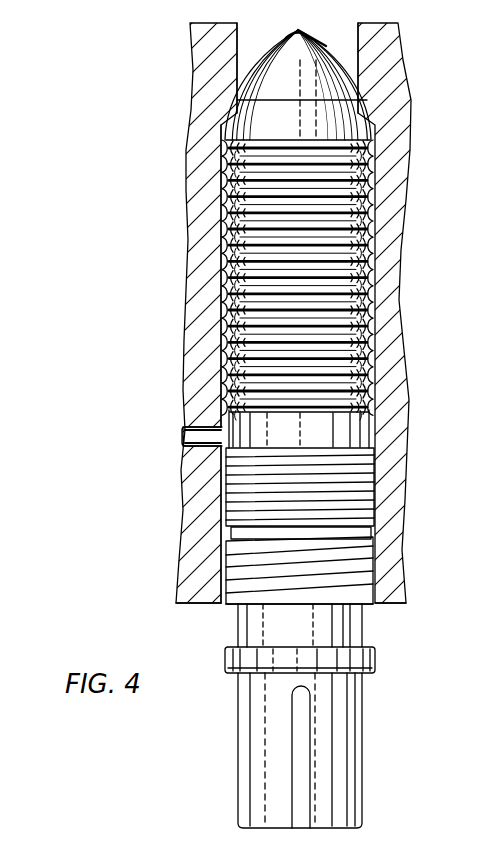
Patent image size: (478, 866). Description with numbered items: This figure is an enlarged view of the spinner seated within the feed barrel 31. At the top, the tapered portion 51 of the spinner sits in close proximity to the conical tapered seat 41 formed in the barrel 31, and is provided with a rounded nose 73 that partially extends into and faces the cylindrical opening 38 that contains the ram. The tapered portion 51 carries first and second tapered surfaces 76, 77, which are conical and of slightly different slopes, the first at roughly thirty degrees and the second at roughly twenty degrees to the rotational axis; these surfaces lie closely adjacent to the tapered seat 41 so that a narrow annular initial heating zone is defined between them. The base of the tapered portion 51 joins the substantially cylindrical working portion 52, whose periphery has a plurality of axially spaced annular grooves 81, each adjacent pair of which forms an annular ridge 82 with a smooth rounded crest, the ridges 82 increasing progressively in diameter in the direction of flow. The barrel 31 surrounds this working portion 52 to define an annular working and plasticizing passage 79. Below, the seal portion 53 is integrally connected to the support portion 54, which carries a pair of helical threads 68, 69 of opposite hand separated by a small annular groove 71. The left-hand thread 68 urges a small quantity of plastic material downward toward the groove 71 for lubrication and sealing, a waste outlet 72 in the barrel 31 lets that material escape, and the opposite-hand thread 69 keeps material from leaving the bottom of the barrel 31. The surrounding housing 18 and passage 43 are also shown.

The housing wall (right) 18 is at (354, 82).
The barrel 31 is at (200, 489).
The cylindrical opening 38 is at (263, 23).
The tapered seat 41 is at (240, 100).
The side passage 43 is at (183, 433).
The tapered portion 51 is at (322, 30).
The working portion 52 is at (214, 299).
The seal portion 53 is at (218, 614).
The support portion 54 is at (228, 700).
The helical thread 68 is at (360, 473).
The helical thread 69 is at (360, 573).
The annular groove 71 is at (215, 535).
The waste outlet 72 is at (377, 533).
The rounded nose 73 is at (298, 29).
The first tapered surface 76 is at (252, 65).
The second tapered surface 77 is at (222, 132).
The annular working and plasticizing passage 79 is at (279, 278).
The annular grooves 81 is at (373, 153).
The annular ridge 82 is at (373, 158).